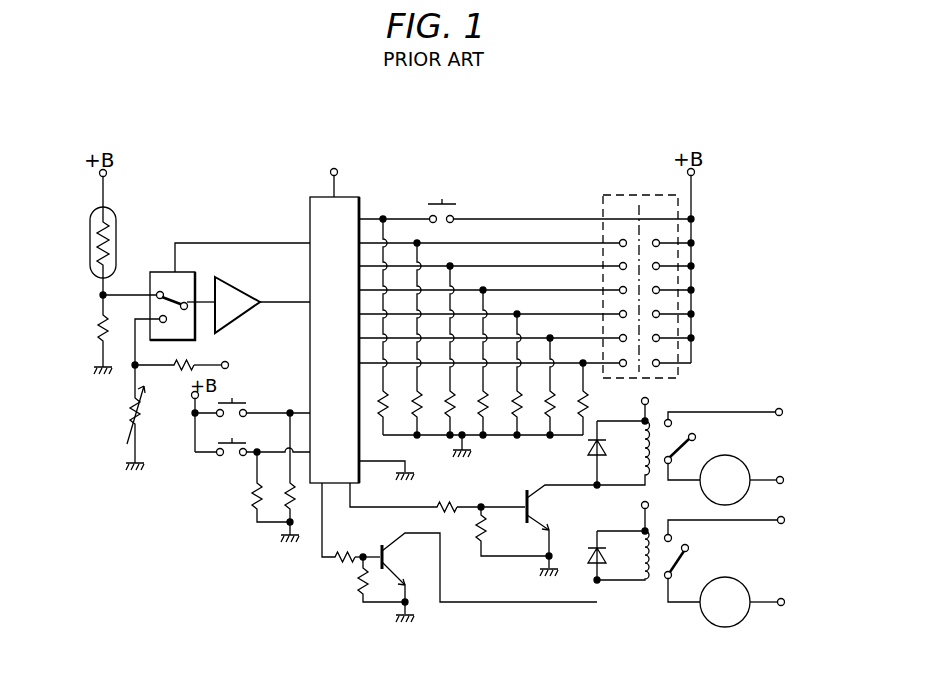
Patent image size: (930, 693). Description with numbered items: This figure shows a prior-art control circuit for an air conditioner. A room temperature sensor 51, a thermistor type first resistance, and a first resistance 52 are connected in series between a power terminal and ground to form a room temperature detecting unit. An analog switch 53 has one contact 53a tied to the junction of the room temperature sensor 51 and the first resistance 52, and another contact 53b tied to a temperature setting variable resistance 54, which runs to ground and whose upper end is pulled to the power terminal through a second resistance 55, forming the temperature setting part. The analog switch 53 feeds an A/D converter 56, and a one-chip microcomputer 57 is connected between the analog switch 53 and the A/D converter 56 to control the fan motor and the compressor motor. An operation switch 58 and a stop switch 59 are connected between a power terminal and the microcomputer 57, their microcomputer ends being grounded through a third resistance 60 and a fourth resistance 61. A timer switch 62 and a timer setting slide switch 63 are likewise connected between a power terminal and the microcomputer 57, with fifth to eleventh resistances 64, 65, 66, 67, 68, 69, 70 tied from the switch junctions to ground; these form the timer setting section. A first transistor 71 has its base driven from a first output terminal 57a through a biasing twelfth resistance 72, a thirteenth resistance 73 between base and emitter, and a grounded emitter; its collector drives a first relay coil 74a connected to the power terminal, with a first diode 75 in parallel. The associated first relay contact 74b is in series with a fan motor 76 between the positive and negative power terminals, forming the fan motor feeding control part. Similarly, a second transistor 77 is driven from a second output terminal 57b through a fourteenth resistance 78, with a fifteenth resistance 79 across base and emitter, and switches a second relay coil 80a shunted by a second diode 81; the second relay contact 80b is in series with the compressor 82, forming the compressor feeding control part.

The room temperature sensor 51 is at (92, 238).
The first resistance 52 is at (98, 326).
The analog switch 53 is at (199, 318).
The contact 53a is at (157, 292).
The contact 53b is at (140, 345).
The temperature setting variable resistance 54 is at (125, 414).
The second resistance 55 is at (190, 370).
The A/D converter 56 is at (240, 296).
The microcomputer 57 is at (310, 213).
The first output terminal 57a is at (335, 453).
The second output terminal 57b is at (352, 466).
The operation switch 58 is at (238, 402).
The stop switch 59 is at (238, 442).
The third resistance 60 is at (301, 528).
The fourth resistance 61 is at (264, 517).
The timer switch 62 is at (444, 203).
The timer setting slide switch 63 is at (640, 195).
The fifth resistance 64 is at (383, 434).
The sixth resistance 65 is at (379, 414).
The seventh resistance 66 is at (406, 414).
The eighth resistance 67 is at (439, 414).
The ninth resistance 68 is at (472, 414).
The tenth resistance 69 is at (505, 414).
The eleventh resistance 70 is at (539, 414).
The first transistor 71 is at (525, 495).
The twelfth resistance 72 is at (448, 512).
The thirteenth resistance 73 is at (481, 515).
The first relay coil 74a is at (640, 464).
The first relay contact 74b is at (691, 432).
The first diode 75 is at (593, 462).
The fan motor 76 is at (737, 459).
The second transistor 77 is at (395, 564).
The fourteenth resistance 78 is at (338, 566).
The fifteenth resistance 79 is at (363, 600).
The second relay coil 80a is at (655, 571).
The second relay contact 80b is at (688, 557).
The second diode 81 is at (592, 579).
The compressor 82 is at (744, 588).